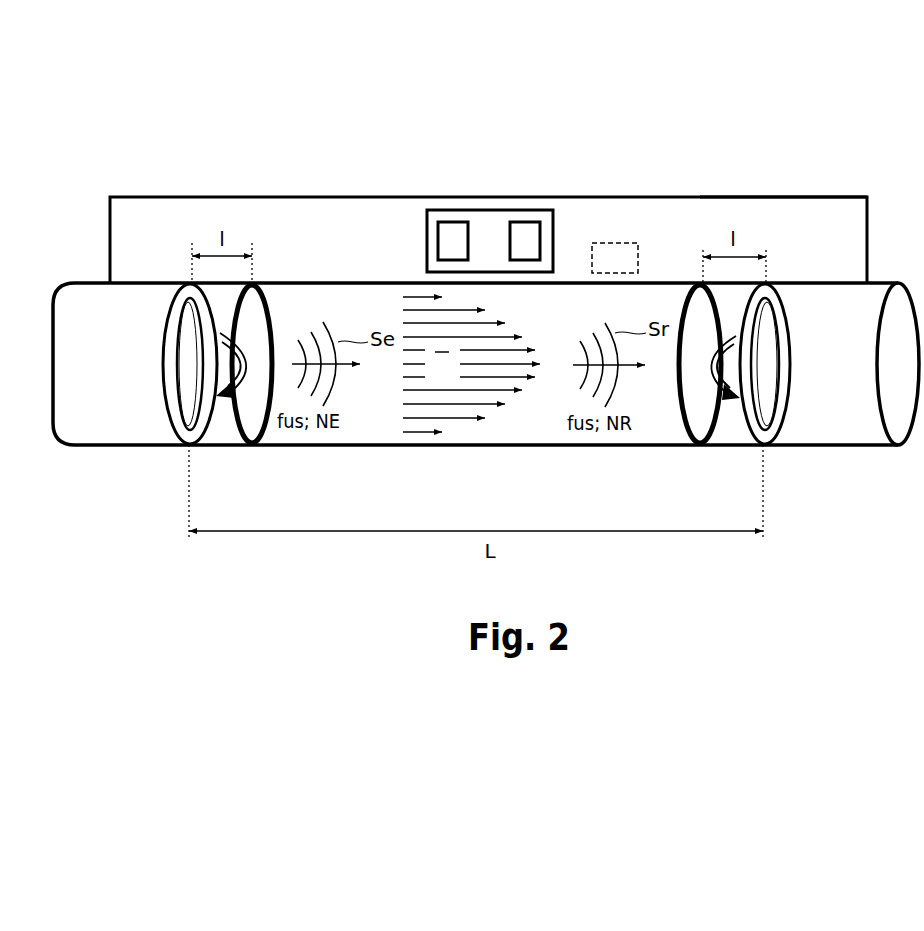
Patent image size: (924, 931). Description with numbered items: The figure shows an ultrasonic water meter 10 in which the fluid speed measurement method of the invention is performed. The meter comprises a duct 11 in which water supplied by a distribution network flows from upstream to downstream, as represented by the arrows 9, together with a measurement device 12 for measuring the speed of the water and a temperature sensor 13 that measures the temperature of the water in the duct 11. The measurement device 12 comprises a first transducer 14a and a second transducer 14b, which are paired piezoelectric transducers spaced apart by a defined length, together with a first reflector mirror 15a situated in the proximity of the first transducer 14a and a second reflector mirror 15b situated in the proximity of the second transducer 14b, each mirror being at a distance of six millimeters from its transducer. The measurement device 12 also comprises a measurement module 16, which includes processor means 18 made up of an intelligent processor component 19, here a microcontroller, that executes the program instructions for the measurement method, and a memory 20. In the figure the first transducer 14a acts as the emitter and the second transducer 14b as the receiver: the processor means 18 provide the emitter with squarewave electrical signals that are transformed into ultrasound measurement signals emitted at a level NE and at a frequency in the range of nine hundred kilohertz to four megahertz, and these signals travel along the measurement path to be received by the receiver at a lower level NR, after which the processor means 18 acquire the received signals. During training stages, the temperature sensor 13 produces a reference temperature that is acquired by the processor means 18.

The arrows 9 is at (467, 418).
The ultrasonic water meter 10 is at (463, 104).
The duct 11 is at (350, 283).
The measurement device 12 is at (719, 190).
The temperature sensor 13 is at (620, 243).
The first transducer 14a is at (172, 425).
The second transducer 14b is at (775, 420).
The first reflector mirror 15a is at (258, 300).
The second reflector mirror 15b is at (683, 300).
The measurement module 16 is at (163, 197).
The processor means 18 is at (495, 210).
The processor component 19 is at (452, 222).
The memory 20 is at (527, 222).